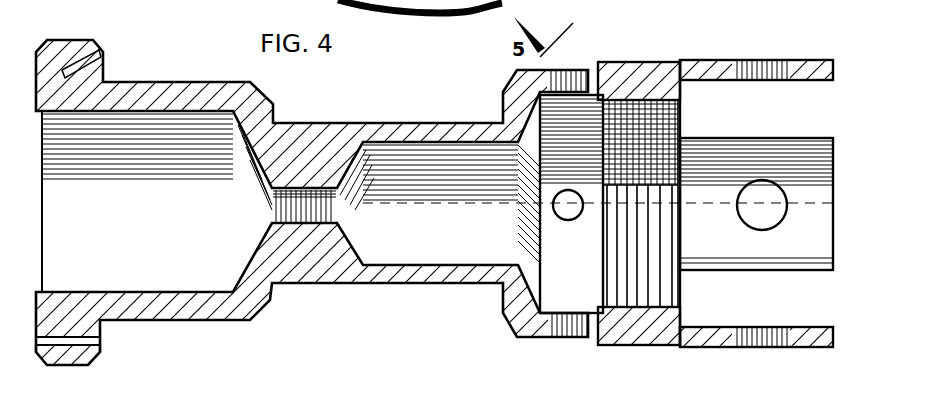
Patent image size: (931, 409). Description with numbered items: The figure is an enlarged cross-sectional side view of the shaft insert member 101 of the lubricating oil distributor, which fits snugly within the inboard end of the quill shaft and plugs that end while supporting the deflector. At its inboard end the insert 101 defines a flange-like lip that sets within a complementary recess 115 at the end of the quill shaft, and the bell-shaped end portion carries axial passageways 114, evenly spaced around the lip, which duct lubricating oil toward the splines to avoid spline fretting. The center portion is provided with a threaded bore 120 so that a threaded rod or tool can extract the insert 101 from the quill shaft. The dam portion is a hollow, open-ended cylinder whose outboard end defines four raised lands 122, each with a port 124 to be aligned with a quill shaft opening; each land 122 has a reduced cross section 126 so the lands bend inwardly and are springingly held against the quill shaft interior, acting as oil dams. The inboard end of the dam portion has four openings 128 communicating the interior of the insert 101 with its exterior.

The shaft insert member 101 is at (398, 278).
The axial passageways 114 is at (100, 348).
The complementary recess 115 is at (52, 40).
The threaded bore 120 is at (320, 195).
The raised fingers or lands 122 is at (830, 352).
The opening or port 124 is at (778, 201).
The reduced cross section 126 is at (674, 61).
The openings 128 is at (566, 219).